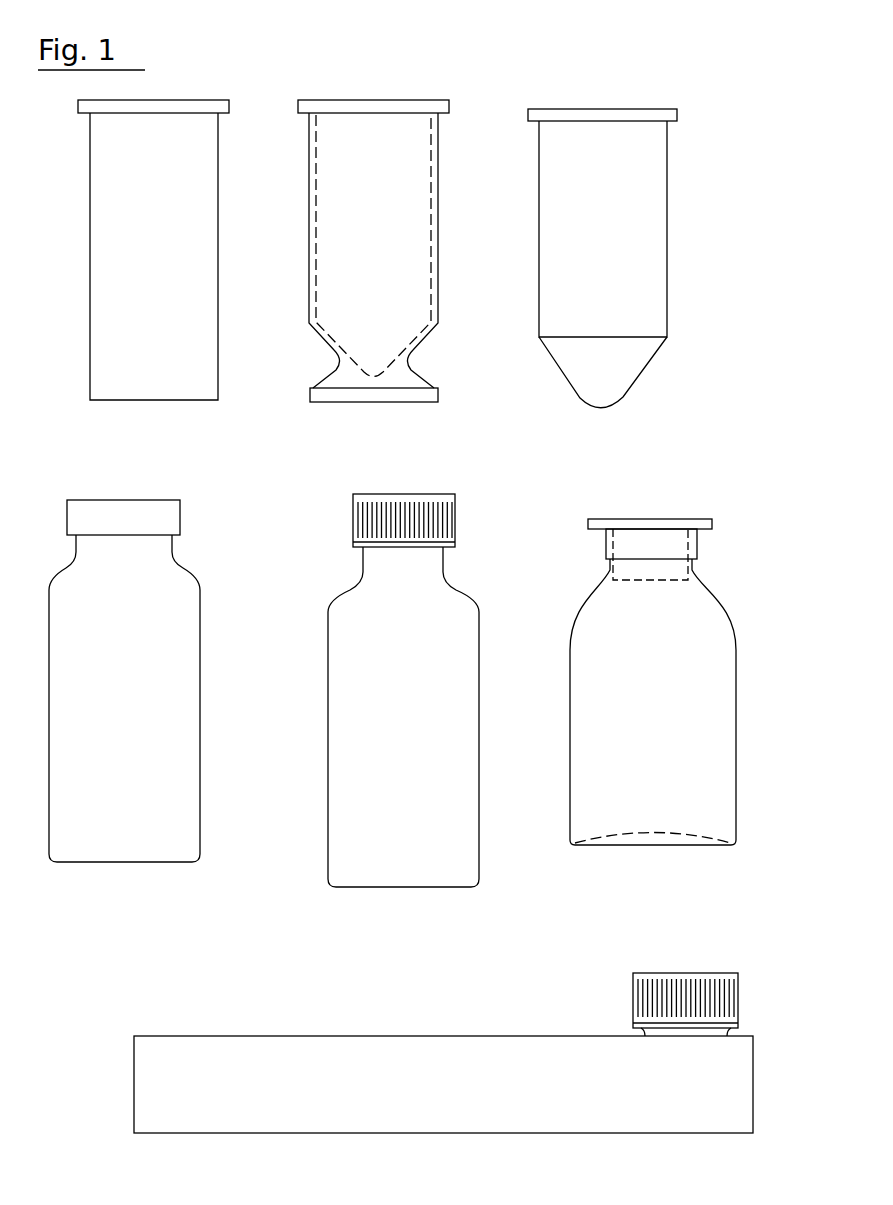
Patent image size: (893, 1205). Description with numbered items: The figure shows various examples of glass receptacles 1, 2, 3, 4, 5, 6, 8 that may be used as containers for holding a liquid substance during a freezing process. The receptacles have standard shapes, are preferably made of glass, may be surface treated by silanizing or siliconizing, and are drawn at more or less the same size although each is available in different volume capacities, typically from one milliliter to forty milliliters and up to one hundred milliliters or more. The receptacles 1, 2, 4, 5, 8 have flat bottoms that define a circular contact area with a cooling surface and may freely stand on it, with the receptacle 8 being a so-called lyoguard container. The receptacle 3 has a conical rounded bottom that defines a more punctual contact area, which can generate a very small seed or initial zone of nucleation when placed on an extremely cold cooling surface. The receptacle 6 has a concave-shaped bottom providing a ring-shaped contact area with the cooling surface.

The receptacle 1 is at (212, 168).
The receptacle 2 is at (415, 177).
The receptacle 3 is at (643, 202).
The receptacle 4 is at (180, 602).
The receptacle 5 is at (442, 602).
The receptacle 6 is at (678, 622).
The receptacle 8 is at (193, 1053).